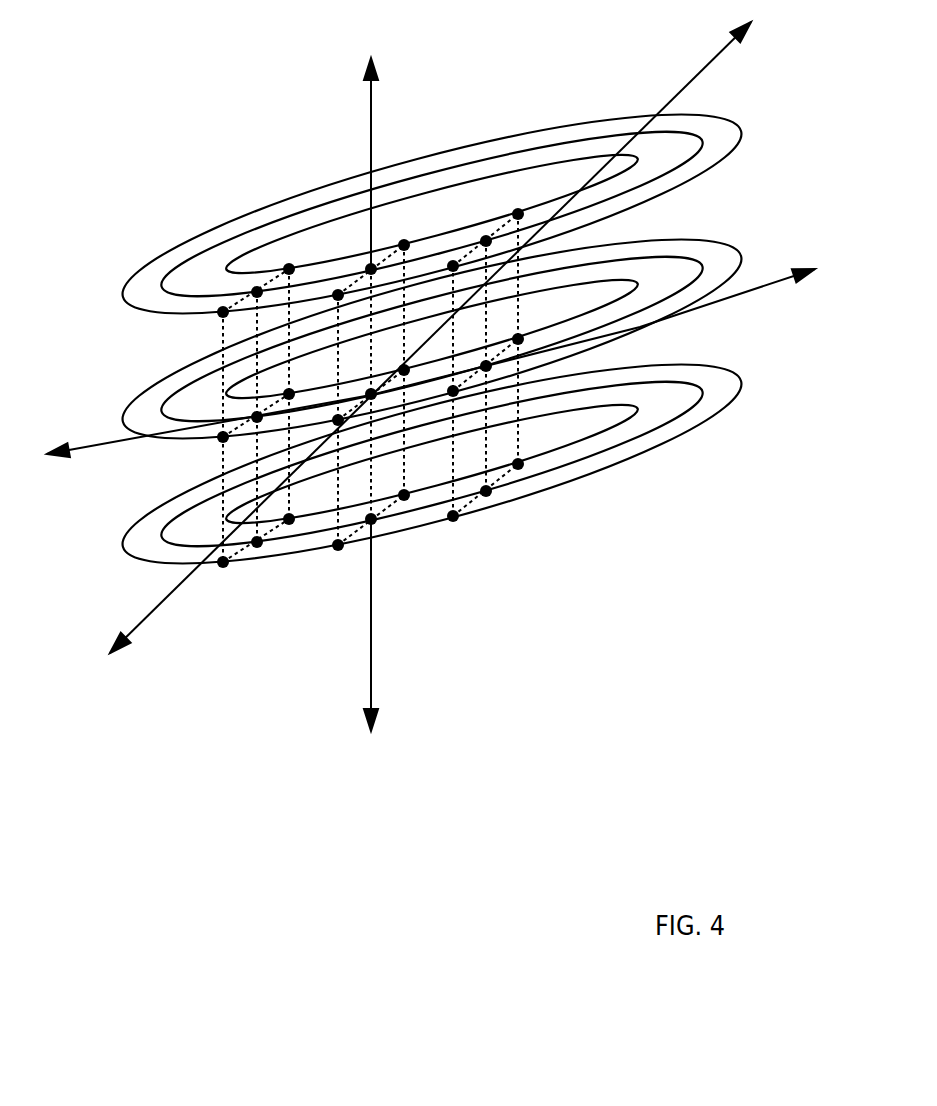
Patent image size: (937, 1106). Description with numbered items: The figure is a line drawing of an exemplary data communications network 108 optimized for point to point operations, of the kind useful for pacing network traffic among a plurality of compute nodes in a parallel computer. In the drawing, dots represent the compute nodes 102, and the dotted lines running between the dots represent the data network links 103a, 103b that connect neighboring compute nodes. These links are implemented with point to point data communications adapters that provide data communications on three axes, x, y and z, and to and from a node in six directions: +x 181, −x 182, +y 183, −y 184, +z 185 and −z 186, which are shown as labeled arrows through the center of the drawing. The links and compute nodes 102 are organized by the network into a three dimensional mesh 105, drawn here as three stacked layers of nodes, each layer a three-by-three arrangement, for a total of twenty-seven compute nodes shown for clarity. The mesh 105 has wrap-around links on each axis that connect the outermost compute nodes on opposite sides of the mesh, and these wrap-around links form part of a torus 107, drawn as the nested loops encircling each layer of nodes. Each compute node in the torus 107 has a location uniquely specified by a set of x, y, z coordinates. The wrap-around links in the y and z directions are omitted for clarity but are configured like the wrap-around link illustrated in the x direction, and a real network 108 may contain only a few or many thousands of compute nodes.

The compute nodes 102 is at (518, 464).
The data network link 103a is at (223, 340).
The data network link 103b is at (223, 466).
The three dimensional mesh 105 is at (518, 214).
The torus 107 is at (200, 211).
The data communications network optimized for point to point operations 108 is at (330, 957).
The +x direction 181 is at (850, 298).
The −x direction 182 is at (44, 493).
The +y direction 183 is at (792, 50).
The −y direction 184 is at (107, 701).
The +z direction 185 is at (387, 50).
The −z direction 186 is at (388, 788).